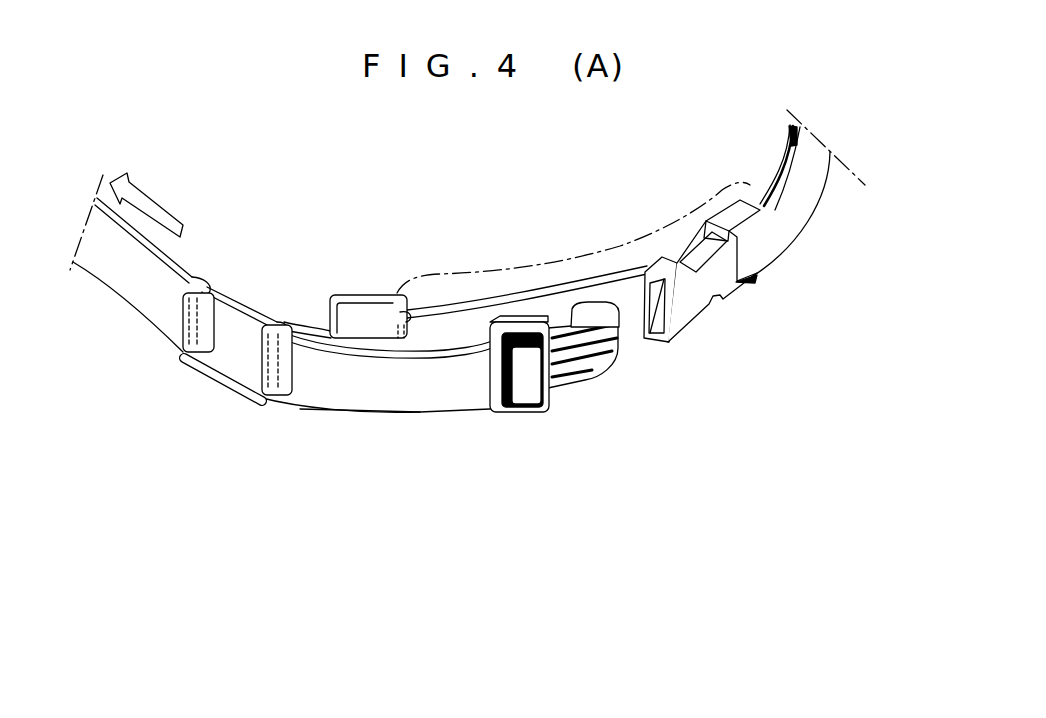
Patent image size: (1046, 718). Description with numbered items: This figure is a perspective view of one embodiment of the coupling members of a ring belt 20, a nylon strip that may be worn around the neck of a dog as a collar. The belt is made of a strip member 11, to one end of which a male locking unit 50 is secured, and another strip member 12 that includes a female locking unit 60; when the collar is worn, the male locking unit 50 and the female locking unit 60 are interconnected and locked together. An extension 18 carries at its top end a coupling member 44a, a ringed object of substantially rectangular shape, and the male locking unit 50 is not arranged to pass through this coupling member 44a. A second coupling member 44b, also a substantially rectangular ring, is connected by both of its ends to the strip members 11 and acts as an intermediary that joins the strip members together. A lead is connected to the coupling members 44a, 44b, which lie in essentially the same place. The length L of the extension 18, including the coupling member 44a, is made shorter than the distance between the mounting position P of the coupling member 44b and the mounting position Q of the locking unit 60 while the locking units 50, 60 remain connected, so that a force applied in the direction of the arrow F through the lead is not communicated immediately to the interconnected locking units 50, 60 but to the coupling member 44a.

The strip member 11 is at (168, 297).
The strip member 12 is at (792, 212).
The extension 18 is at (457, 346).
The ring belt 20 is at (434, 424).
The coupling member 44a is at (351, 295).
The coupling member 44b is at (219, 377).
The male locking unit 50 is at (535, 425).
The female locking unit 60 is at (709, 315).
The arrow F is at (158, 210).
The length L is at (594, 250).
The mounting position P is at (278, 411).
The mounting position Q is at (762, 292).